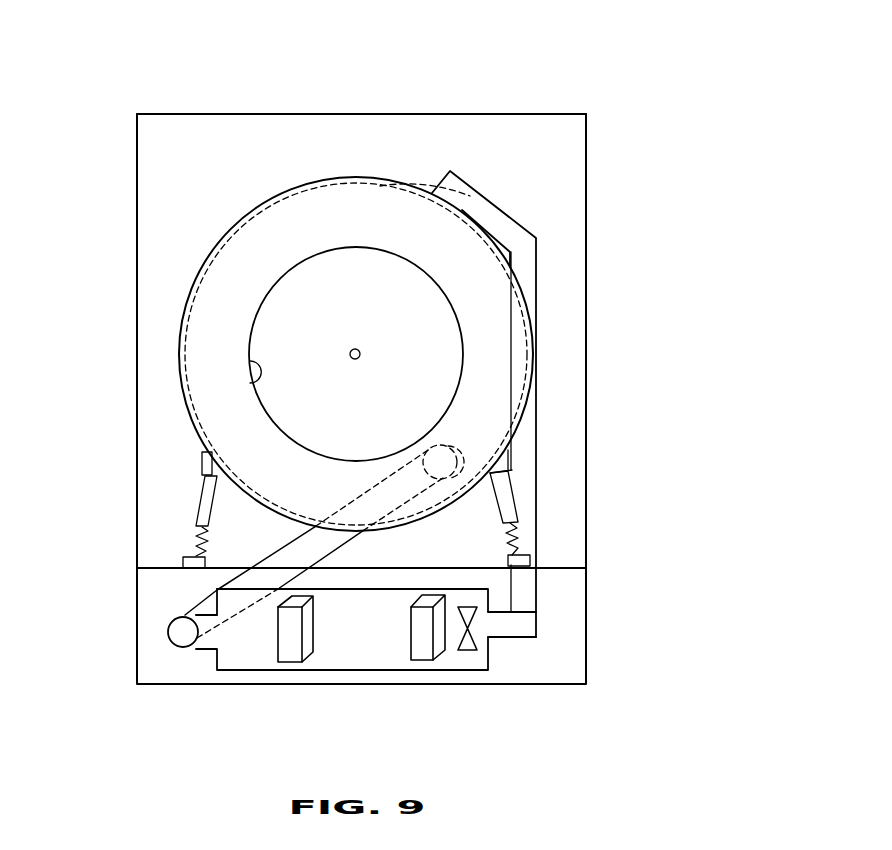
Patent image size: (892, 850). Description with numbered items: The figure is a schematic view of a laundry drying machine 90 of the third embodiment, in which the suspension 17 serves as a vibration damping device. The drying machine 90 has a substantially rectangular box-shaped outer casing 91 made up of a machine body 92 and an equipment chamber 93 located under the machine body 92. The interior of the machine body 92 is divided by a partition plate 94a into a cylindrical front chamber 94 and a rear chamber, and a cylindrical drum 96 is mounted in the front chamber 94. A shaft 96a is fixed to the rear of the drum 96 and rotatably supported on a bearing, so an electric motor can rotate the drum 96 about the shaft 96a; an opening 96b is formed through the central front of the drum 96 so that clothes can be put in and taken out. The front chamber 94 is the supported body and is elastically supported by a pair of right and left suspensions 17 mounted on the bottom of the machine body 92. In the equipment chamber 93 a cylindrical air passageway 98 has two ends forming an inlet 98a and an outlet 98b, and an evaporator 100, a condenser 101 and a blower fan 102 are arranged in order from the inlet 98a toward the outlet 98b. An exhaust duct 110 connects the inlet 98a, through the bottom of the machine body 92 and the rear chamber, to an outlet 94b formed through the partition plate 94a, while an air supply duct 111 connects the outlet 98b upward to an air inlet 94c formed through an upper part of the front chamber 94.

The drying machine 90 is at (545, 80).
The outer casing 91 is at (588, 339).
The machine body 92 is at (448, 114).
The equipment chamber 93 is at (588, 611).
The front chamber 94 is at (297, 178).
The partition plate 94a is at (258, 233).
The outlet 94b is at (457, 458).
The air inlet 94c is at (433, 198).
The drum 96 is at (210, 247).
The shaft 96a is at (349, 351).
The opening 96b is at (250, 360).
The suspension 17 is at (203, 502).
The air passageway 98 is at (365, 671).
The inlet 98a is at (216, 648).
The outlet 98b is at (492, 625).
The evaporator 100 is at (288, 663).
The condenser 101 is at (420, 661).
The blower fan 102 is at (468, 651).
The exhaust duct 110 is at (202, 617).
The air supply duct 111 is at (522, 229).